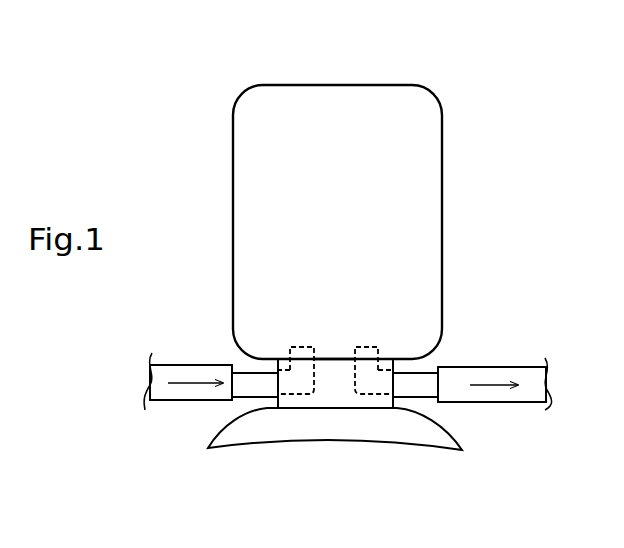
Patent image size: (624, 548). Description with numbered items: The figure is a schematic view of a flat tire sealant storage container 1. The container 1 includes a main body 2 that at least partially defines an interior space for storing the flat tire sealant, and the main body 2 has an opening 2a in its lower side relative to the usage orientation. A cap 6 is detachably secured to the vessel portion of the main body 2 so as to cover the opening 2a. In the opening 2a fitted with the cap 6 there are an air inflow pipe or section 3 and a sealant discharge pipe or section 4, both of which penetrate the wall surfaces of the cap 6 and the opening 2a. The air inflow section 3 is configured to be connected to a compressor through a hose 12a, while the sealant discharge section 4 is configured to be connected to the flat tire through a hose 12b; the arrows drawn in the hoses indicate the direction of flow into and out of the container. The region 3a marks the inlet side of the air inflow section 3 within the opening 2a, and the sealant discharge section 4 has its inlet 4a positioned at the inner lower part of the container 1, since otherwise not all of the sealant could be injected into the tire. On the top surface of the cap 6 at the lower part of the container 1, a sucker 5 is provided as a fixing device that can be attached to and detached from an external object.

The container 1 is at (468, 105).
The main body 2 is at (445, 172).
The opening 2a is at (340, 359).
The air inflow pipe or section 3 is at (248, 397).
The inlet port 3a is at (300, 347).
The sealant discharge pipe or section 4 is at (427, 398).
The inlet 4a is at (372, 347).
The sucker 5 is at (423, 449).
The cap 6 is at (329, 392).
The hose 12a is at (163, 400).
The hose 12b is at (525, 395).